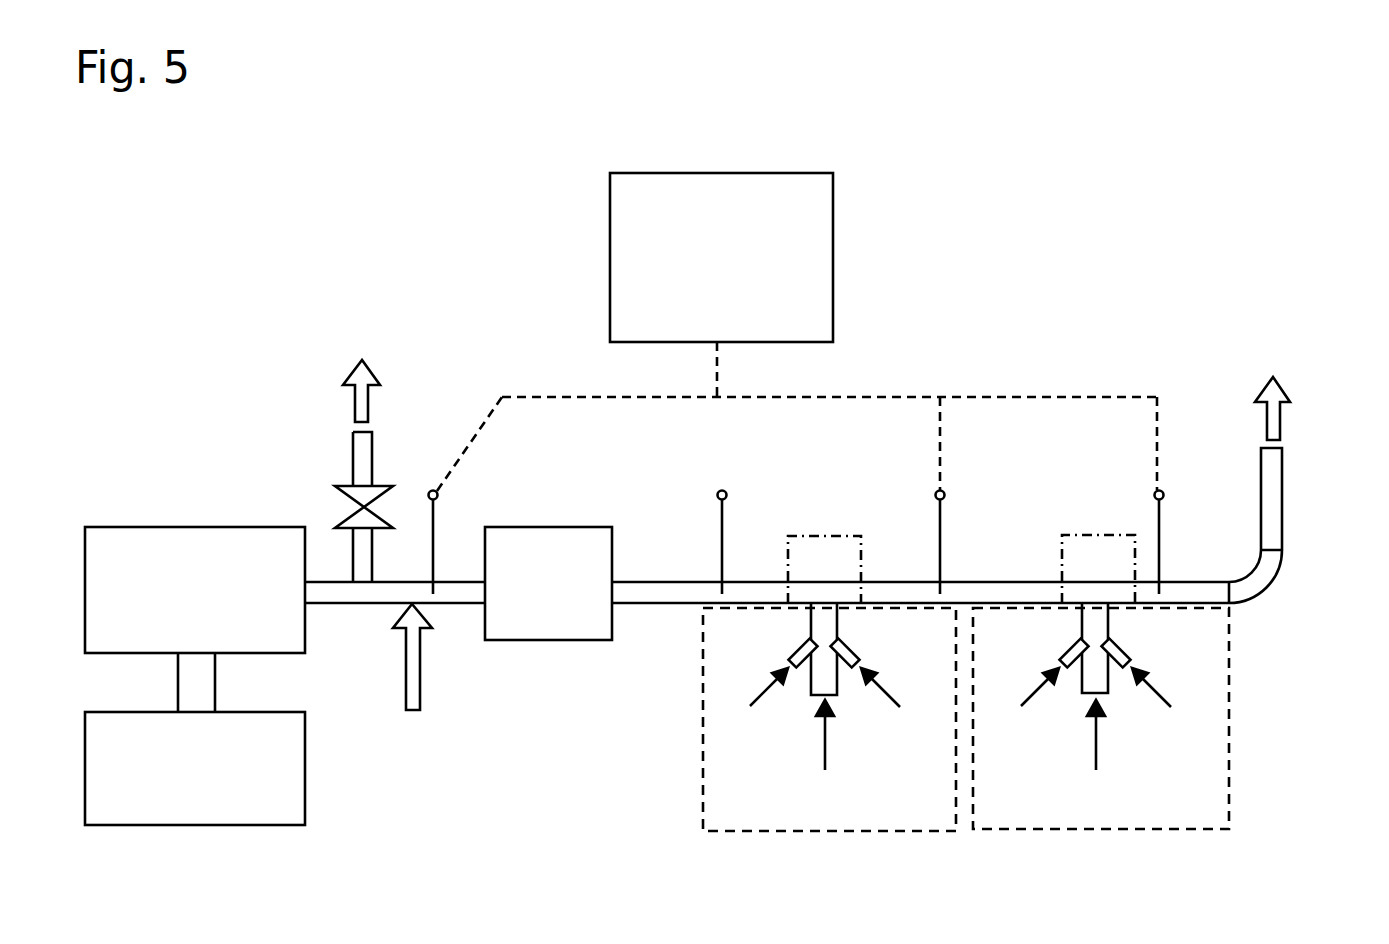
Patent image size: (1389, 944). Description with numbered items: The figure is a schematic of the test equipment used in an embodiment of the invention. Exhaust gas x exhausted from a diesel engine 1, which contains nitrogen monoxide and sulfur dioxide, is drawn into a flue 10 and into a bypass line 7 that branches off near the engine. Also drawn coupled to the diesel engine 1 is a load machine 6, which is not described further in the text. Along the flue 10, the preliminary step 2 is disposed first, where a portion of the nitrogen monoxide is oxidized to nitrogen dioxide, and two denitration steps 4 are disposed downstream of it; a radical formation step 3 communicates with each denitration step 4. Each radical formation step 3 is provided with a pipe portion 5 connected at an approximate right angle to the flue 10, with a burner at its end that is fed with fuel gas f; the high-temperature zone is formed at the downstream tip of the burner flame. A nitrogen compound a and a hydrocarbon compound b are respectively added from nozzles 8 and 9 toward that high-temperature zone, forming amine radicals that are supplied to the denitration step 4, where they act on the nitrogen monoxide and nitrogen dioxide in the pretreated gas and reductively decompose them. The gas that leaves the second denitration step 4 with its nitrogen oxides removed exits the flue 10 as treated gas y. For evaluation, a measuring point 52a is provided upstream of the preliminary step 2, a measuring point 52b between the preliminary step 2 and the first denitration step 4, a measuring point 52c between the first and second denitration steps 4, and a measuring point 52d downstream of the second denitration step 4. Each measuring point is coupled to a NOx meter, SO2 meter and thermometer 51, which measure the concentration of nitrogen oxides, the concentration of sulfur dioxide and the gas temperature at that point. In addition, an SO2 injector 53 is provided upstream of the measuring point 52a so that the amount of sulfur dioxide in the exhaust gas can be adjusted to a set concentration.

The diesel engine 1 is at (178, 527).
The preliminary step 2 is at (586, 641).
The radical formation step 3 is at (703, 770).
The denitration step 4 is at (830, 565).
The pipe portion 5 is at (811, 684).
The load machine 6 is at (305, 803).
The bypass line 7 is at (353, 466).
The nozzle 8 is at (800, 645).
The nozzle 9 is at (853, 646).
The flue 10 is at (348, 604).
The NOx meter, SO2 meter, and thermometer 51 is at (833, 220).
The measuring point 52a is at (440, 495).
The measuring point 52b is at (715, 494).
The measuring point 52c is at (934, 494).
The measuring point 52d is at (1152, 483).
The SO2 injector 53 is at (421, 686).
The exhaust gas x is at (368, 400).
The treated gas y is at (1282, 418).
The nitrogen compound a is at (891, 700).
The hydrocarbon compound b is at (1036, 700).
The fuel gas f is at (960, 756).